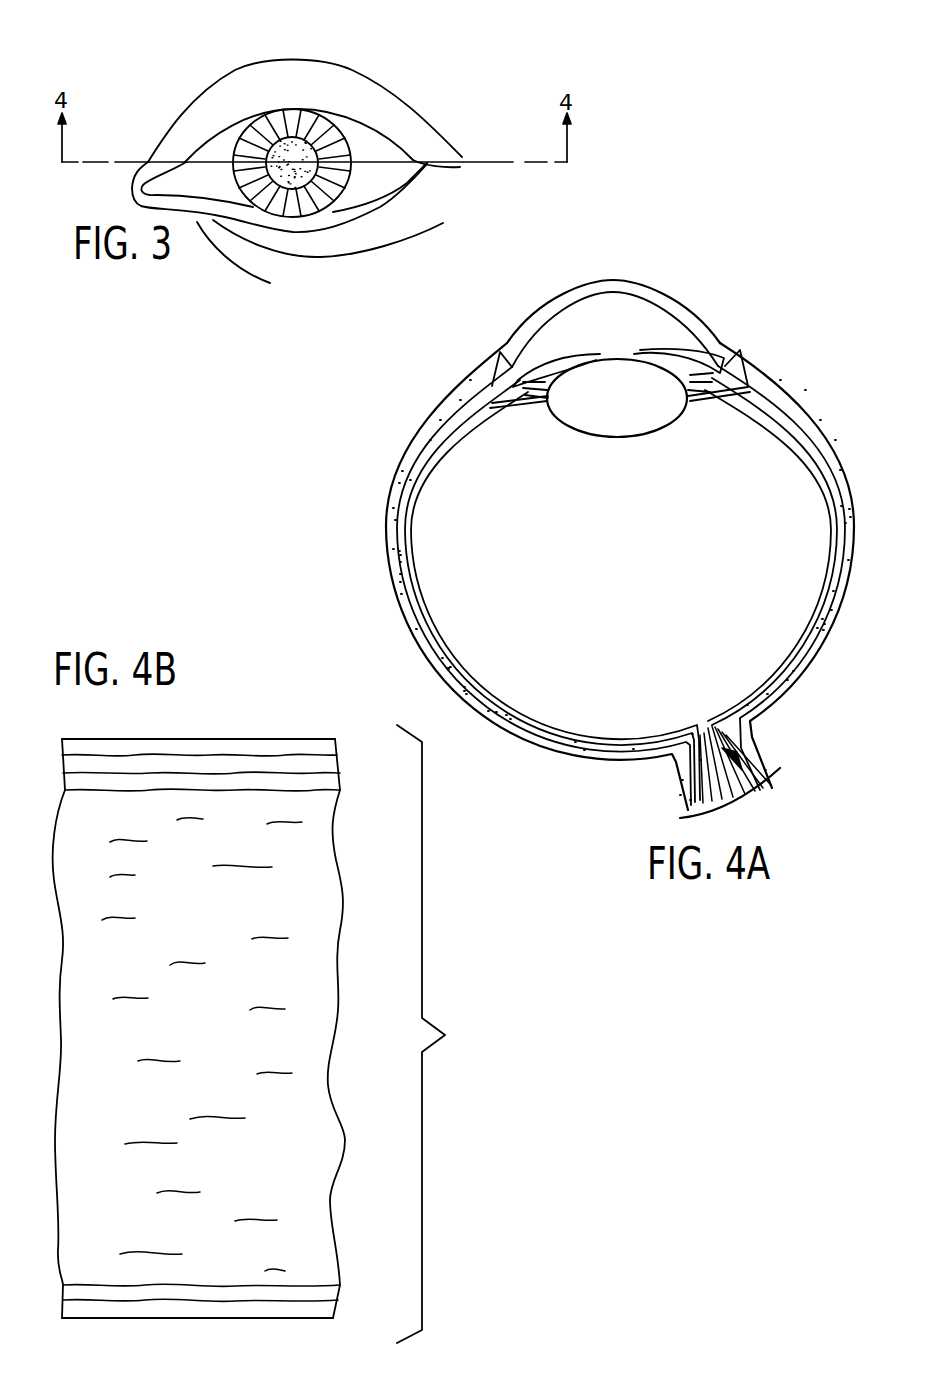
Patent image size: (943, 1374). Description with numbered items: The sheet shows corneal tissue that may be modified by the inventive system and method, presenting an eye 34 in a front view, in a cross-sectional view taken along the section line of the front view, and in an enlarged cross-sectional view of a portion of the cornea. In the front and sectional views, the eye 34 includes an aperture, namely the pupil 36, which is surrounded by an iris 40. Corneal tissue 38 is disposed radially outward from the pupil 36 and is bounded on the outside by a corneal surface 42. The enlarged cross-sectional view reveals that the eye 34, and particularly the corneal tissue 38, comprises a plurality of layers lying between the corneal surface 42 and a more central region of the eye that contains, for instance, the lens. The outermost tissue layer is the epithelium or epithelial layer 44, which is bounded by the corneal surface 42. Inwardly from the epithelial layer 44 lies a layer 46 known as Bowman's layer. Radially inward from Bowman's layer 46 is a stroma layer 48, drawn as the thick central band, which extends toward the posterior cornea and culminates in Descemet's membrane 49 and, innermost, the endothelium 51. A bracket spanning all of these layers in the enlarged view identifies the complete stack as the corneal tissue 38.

In FIG. 3, the eye 34 is at (351, 107).
In FIG. 4A, the eye 34 is at (829, 409).
In FIG. 3, the pupil 36 is at (291, 146).
In FIG. 4A, the pupil 36 is at (615, 358).
In FIG. 3, the corneal tissue 38 is at (217, 147).
In FIG. 4A, the corneal tissue 38 is at (552, 305).
In FIG. 4B, the corneal tissue 38 is at (445, 1035).
In FIG. 3, the iris 40 is at (262, 129).
In FIG. 4A, the iris 40 is at (718, 372).
In FIG. 3, the corneal surface 42 is at (367, 182).
In FIG. 4A, the corneal surface 42 is at (611, 280).
In FIG. 4B, the corneal surface 42 is at (77, 747).
In FIG. 4B, the epithelial layer 44 is at (330, 767).
In FIG. 4B, the Bowman's layer 46 is at (330, 785).
In FIG. 4B, the stroma layer 48 is at (62, 1032).
In FIG. 4B, the Descemet's membrane 49 is at (320, 1293).
In FIG. 4B, the endothelium 51 is at (317, 1310).